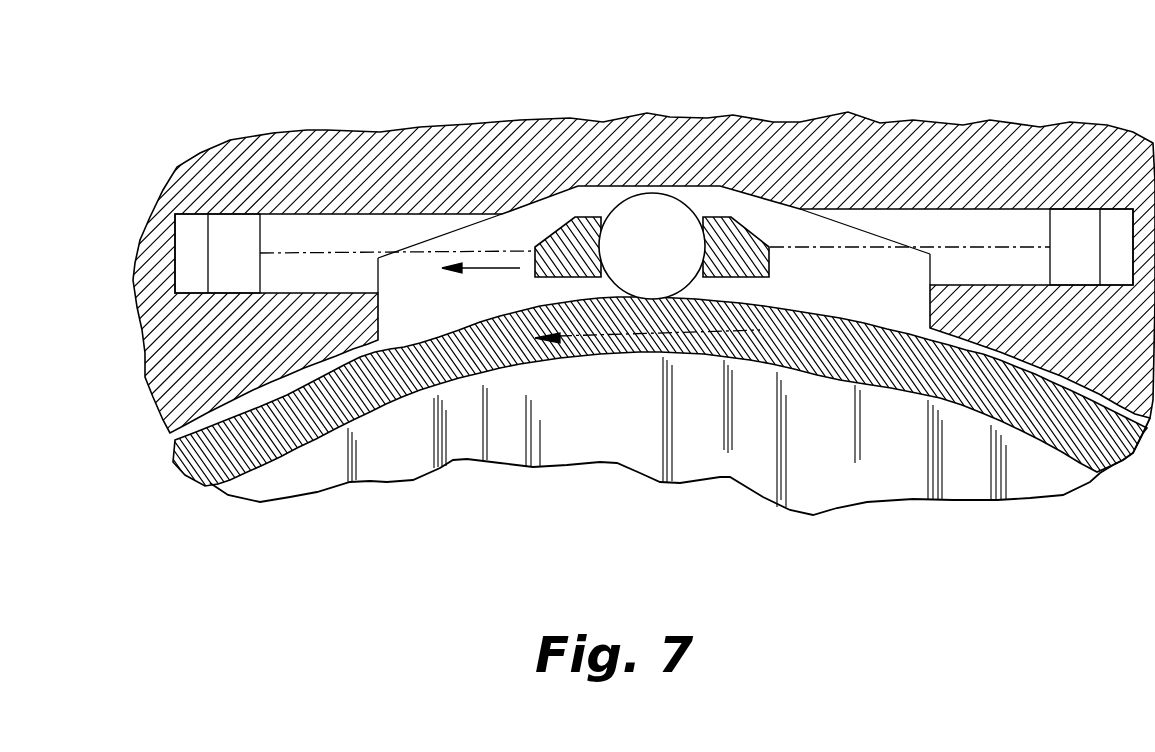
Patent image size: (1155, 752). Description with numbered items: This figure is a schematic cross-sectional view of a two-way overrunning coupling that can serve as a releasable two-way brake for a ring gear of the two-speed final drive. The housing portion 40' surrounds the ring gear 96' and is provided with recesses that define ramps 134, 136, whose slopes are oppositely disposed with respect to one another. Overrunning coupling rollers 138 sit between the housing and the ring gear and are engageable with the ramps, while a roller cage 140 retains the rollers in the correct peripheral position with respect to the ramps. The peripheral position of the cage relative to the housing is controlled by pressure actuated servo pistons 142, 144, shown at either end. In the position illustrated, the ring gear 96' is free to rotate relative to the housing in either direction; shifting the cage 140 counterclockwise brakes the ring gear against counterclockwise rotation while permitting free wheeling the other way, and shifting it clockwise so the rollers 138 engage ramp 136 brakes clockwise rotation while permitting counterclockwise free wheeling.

The housing portion 40' is at (644, 232).
The ring gear 96' is at (660, 258).
The ramp 134 is at (454, 236).
The ramp 136 is at (843, 227).
The overrunning coupling rollers 138 is at (658, 244).
The roller cage 140 is at (572, 248).
The pressure actuated servo piston 142 is at (1078, 240).
The pressure actuated servo piston 144 is at (193, 228).